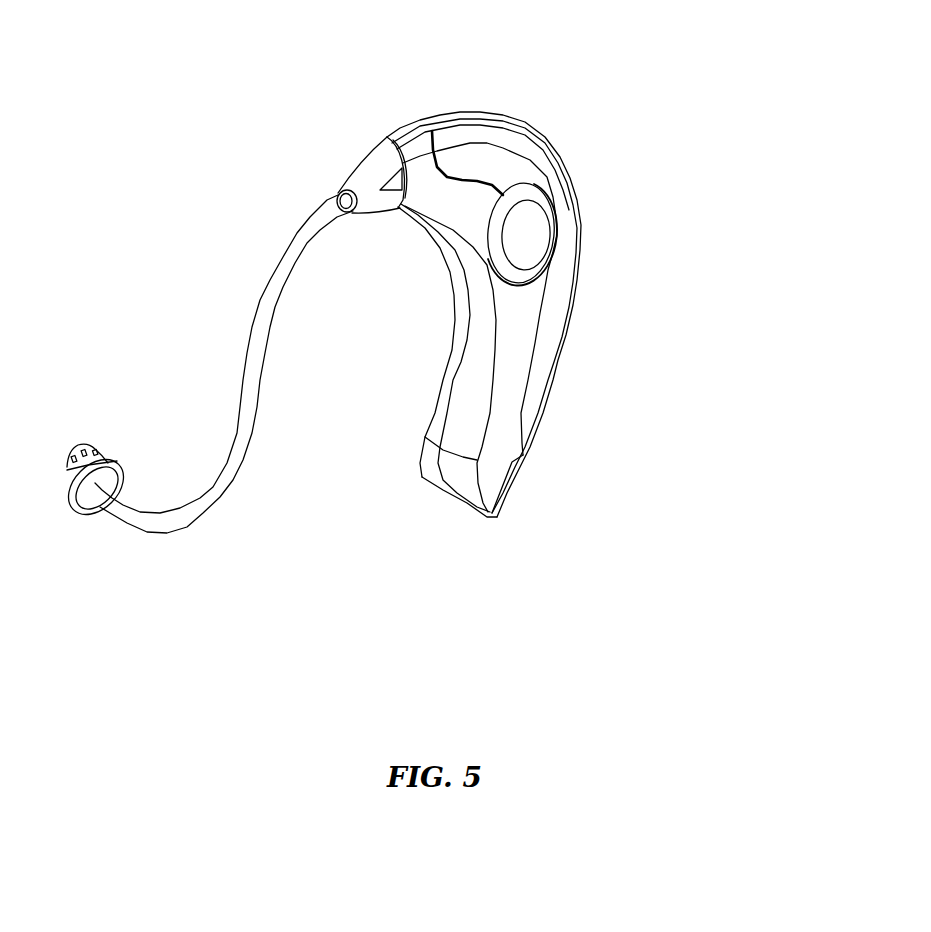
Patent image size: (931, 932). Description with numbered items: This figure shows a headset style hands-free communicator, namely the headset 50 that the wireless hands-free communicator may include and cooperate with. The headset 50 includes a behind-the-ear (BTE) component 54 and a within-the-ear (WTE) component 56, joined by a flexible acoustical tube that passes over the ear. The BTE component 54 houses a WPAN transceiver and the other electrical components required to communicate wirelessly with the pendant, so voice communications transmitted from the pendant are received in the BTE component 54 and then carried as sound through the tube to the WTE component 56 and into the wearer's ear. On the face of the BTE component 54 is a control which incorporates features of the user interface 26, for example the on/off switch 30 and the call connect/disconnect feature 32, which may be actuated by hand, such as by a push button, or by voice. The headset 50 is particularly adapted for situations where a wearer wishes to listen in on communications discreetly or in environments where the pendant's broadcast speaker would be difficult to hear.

The headset 50 is at (630, 100).
The user interface 26 is at (654, 232).
The on/off switch 30 is at (654, 232).
The call connect/disconnect feature 32 is at (550, 223).
The behind-the-ear (BTE) component 54 is at (562, 350).
The within-the-ear (WTE) component 56 is at (85, 443).